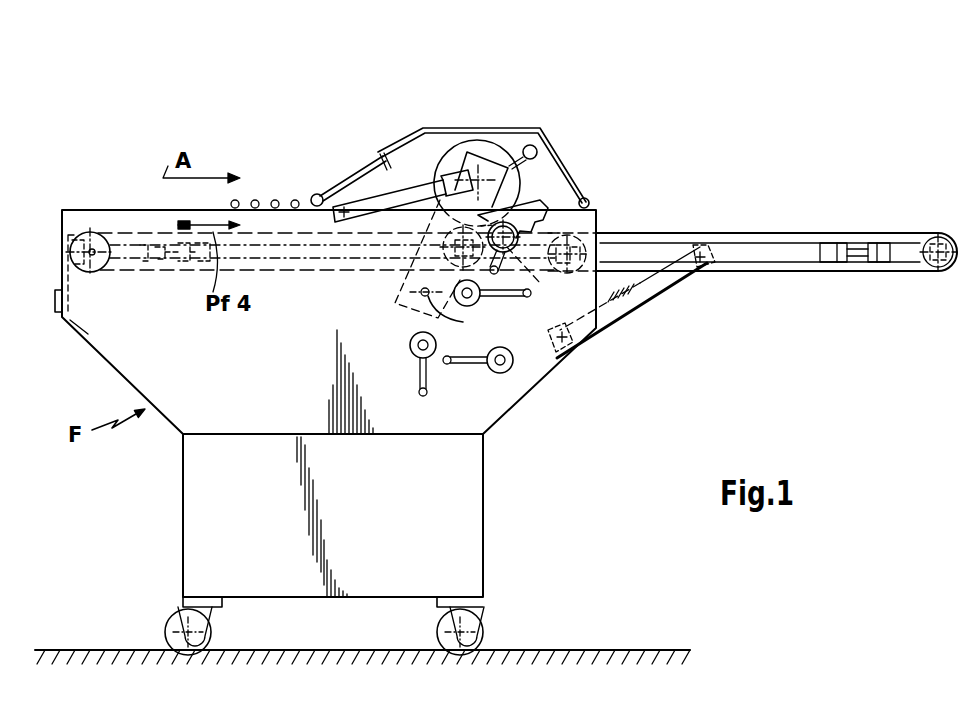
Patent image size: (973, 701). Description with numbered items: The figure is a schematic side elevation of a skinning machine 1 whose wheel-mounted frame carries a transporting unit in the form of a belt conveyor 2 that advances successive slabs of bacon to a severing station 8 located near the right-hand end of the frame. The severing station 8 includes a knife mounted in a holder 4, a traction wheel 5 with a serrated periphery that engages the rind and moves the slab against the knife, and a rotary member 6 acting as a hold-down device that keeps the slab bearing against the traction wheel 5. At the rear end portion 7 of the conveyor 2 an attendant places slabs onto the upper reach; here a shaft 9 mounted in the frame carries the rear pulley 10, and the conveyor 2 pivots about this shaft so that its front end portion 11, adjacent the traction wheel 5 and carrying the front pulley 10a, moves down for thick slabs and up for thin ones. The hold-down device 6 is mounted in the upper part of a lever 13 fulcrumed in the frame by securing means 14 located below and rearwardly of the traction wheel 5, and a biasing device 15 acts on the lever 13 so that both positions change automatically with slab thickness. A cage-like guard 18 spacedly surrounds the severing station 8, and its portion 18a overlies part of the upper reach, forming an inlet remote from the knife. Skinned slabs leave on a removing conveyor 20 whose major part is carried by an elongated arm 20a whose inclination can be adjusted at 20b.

The machine 1 is at (655, 108).
The belt conveyor 2 is at (152, 224).
The holder 4 is at (550, 188).
The traction wheel 5 is at (546, 269).
The rotary member 6 is at (499, 152).
The rear end portion 7 is at (50, 268).
The severing station 8 is at (423, 153).
The shaft 9 is at (94, 256).
The rear pulley 10 is at (83, 234).
The front pulley 10a is at (445, 268).
The front end portion 11 is at (486, 287).
The lever 13 is at (408, 313).
The securing means 14 is at (451, 319).
The biasing device 15 is at (410, 197).
The guard 18 is at (331, 184).
The portion of the guard 18a is at (275, 200).
The removing conveyor 20 is at (833, 222).
The elongated arm 20a is at (773, 258).
The inclination adjustment 20b is at (650, 290).